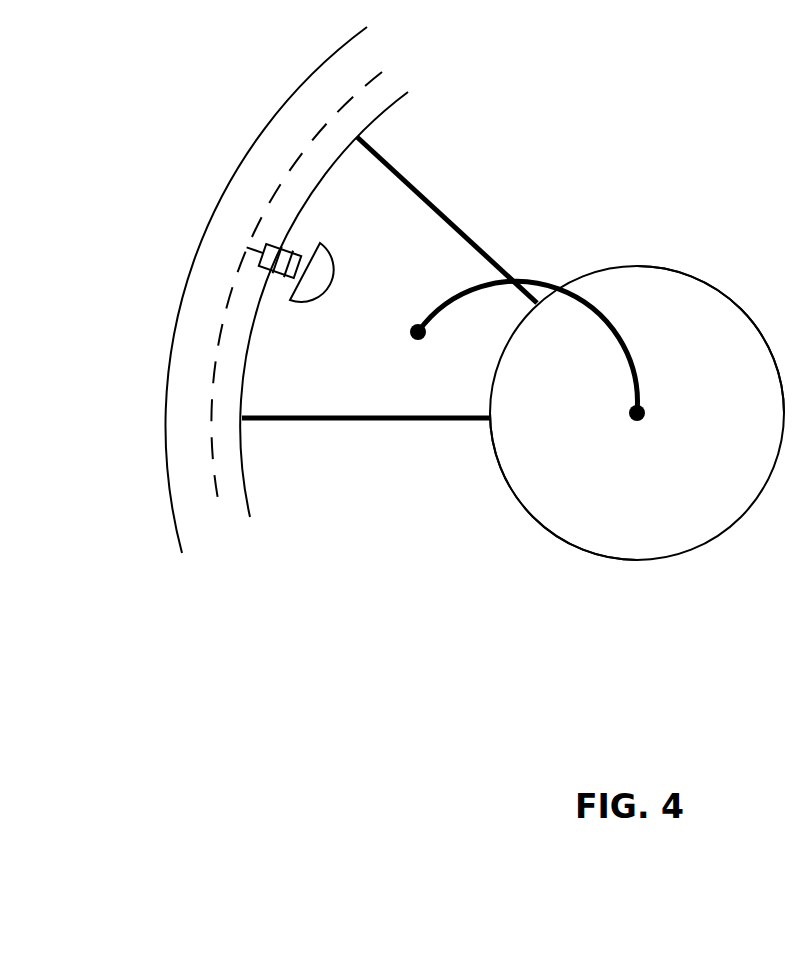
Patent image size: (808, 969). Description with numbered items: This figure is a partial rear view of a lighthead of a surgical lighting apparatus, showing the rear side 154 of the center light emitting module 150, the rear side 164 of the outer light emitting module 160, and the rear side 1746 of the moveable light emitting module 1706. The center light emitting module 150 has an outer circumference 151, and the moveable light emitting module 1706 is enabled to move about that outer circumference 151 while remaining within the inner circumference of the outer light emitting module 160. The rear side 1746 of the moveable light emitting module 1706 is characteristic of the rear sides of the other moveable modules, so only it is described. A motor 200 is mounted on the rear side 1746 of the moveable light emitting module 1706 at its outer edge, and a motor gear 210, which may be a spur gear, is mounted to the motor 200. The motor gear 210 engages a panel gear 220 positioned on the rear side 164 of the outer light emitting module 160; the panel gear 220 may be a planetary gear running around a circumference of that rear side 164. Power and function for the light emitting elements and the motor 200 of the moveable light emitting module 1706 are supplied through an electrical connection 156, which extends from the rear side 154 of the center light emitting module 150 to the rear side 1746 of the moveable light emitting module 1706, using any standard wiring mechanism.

The center light emitting module 150 is at (660, 560).
The outer circumference 151 is at (542, 528).
The rear side 154 is at (673, 298).
The electrical connection 156 is at (547, 283).
The outer light emitting module 160 is at (165, 467).
The rear side 164 is at (187, 340).
The motor 200 is at (335, 260).
The motor gear 210 is at (300, 243).
The panel gear 220 is at (283, 183).
The moveable light emitting module 1706 is at (400, 422).
The rear side 1746 is at (412, 253).